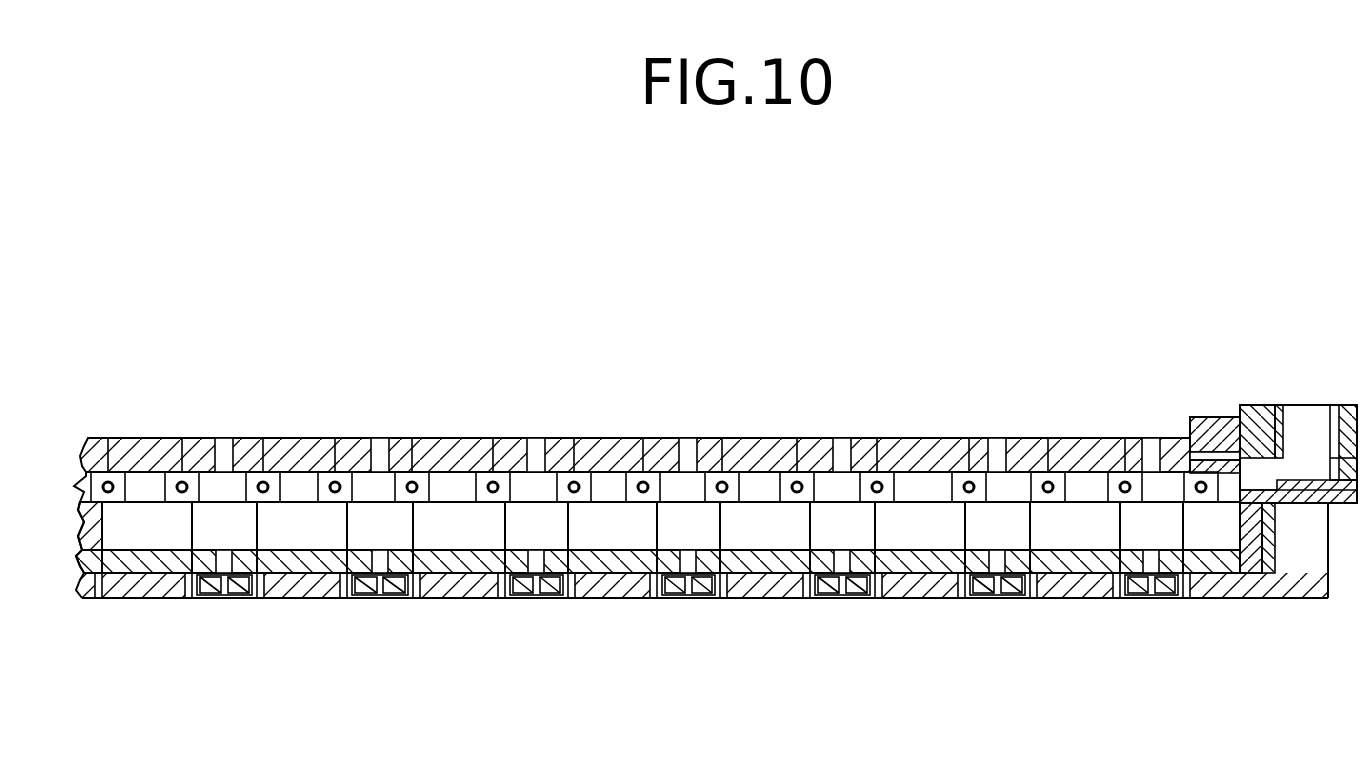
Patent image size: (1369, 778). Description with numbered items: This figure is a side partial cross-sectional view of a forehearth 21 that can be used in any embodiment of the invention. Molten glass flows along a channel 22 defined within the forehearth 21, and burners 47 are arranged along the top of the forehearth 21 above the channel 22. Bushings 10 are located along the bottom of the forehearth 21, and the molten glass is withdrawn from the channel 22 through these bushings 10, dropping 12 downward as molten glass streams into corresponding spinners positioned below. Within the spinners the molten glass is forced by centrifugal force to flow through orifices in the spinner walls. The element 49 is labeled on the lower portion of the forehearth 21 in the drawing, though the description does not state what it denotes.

The forehearth 21 is at (710, 340).
The channel 22 is at (635, 545).
The burners 47 is at (493, 483).
The bottom plate 49 is at (306, 592).
The bushings 10 is at (522, 610).
The dropping of molten glass streams 12 is at (376, 670).